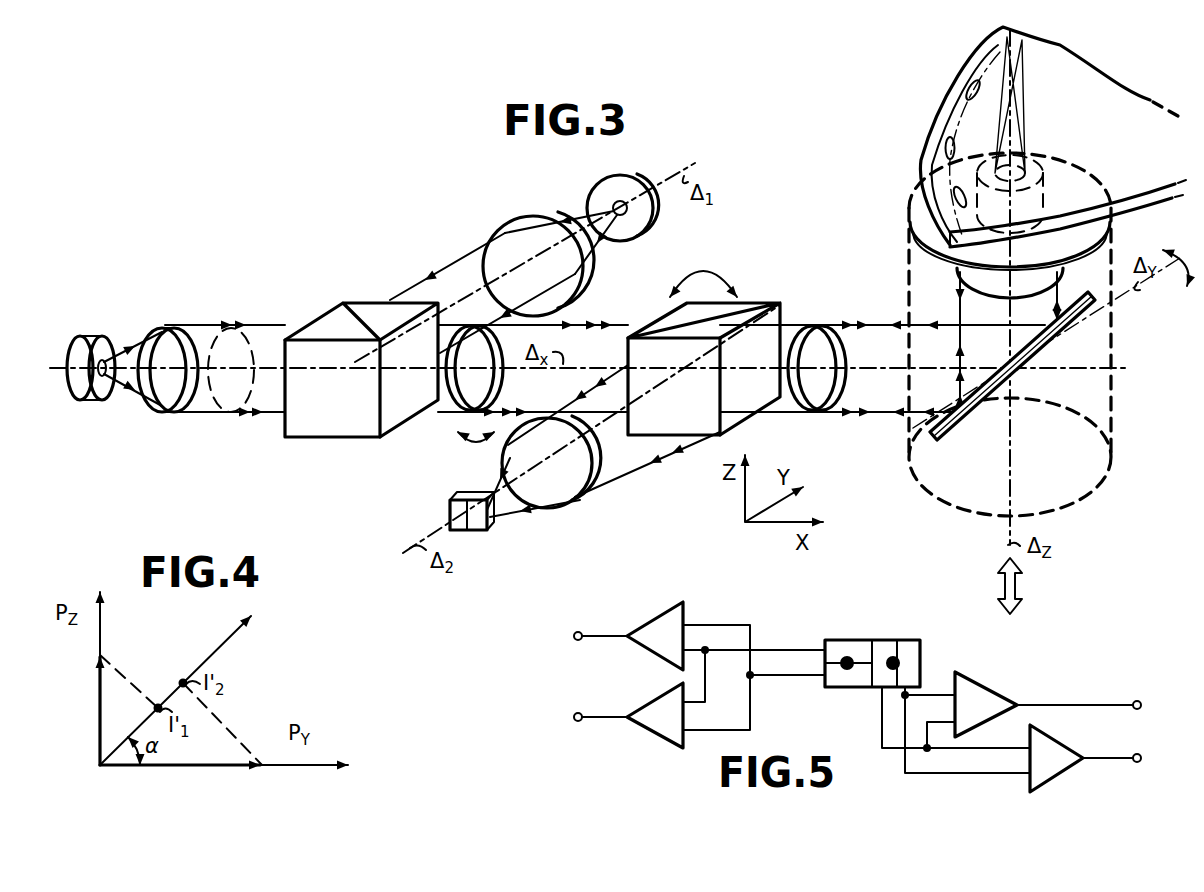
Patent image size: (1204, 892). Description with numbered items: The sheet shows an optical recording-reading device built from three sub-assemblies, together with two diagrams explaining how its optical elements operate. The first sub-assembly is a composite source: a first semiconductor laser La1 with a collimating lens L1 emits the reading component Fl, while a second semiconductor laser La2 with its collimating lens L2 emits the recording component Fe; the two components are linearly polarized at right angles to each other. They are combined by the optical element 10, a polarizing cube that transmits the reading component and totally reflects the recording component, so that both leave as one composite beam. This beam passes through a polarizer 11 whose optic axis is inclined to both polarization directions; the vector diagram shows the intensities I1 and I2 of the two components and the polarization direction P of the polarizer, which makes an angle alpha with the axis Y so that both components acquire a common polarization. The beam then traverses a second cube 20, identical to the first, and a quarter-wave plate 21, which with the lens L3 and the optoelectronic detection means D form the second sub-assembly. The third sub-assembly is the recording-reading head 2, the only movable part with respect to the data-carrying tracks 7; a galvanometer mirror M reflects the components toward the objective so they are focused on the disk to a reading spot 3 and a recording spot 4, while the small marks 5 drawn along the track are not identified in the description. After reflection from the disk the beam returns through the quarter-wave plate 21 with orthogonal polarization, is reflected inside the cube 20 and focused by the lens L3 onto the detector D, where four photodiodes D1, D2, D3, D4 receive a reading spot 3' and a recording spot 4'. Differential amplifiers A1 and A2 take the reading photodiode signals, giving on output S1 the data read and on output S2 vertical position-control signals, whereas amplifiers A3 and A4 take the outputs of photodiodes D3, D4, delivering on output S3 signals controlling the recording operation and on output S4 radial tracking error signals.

In FIG. 3, the first semiconductor laser La1 is at (88, 402).
In FIG. 3, the collimating optical system L1 is at (168, 327).
In FIG. 3, the reading component Fl is at (228, 413).
In FIG. 3, the optical element 10 is at (350, 438).
In FIG. 3, the polarizer 11 is at (450, 415).
In FIG. 3, the recording component Fe is at (478, 248).
In FIG. 3, the collimating optical system L2 is at (522, 220).
In FIG. 3, the second semiconductor laser La2 is at (650, 230).
In FIG. 3, the second cube 20 is at (712, 437).
In FIG. 3, the quarter-wave plate 21 is at (818, 412).
In FIG. 3, the lens L3 is at (573, 498).
In FIG. 3, the optoelectronic detection means D is at (490, 532).
In FIG. 5, the optoelectronic detection means D is at (920, 600).
In FIG. 3, the recording-reading head 2 is at (906, 276).
In FIG. 3, the reading spot 3 is at (1030, 105).
In FIG. 3, the recording spot 4 is at (1050, 137).
In FIG. 3, the information spots 5 is at (918, 144).
In FIG. 3, the data-carrying tracks 7 is at (958, 88).
In FIG. 3, the galvanometer mirror M is at (960, 430).
In FIG. 4, the direction of polarization P is at (183, 689).
In FIG. 4, the intensity vector I1 is at (85, 711).
In FIG. 4, the intensity vector I2 is at (180, 782).
In FIG. 5, the first differential amplifier A1 is at (990, 676).
In FIG. 5, the second differential amplifier A2 is at (1050, 744).
In FIG. 5, the third differential amplifier A3 is at (660, 610).
In FIG. 5, the fourth differential amplifier A4 is at (660, 740).
In FIG. 5, the output S1 is at (1079, 694).
In FIG. 5, the output S2 is at (1112, 775).
In FIG. 5, the output S3 is at (600, 652).
In FIG. 5, the output S4 is at (600, 706).
In FIG. 5, the photodiode D1 is at (908, 641).
In FIG. 5, the photodiode D2 is at (887, 641).
In FIG. 5, the photodiode D3 is at (843, 641).
In FIG. 5, the photodiode D4 is at (836, 692).
In FIG. 5, the reading spot 3' is at (919, 663).
In FIG. 5, the recording spot 4' is at (856, 686).